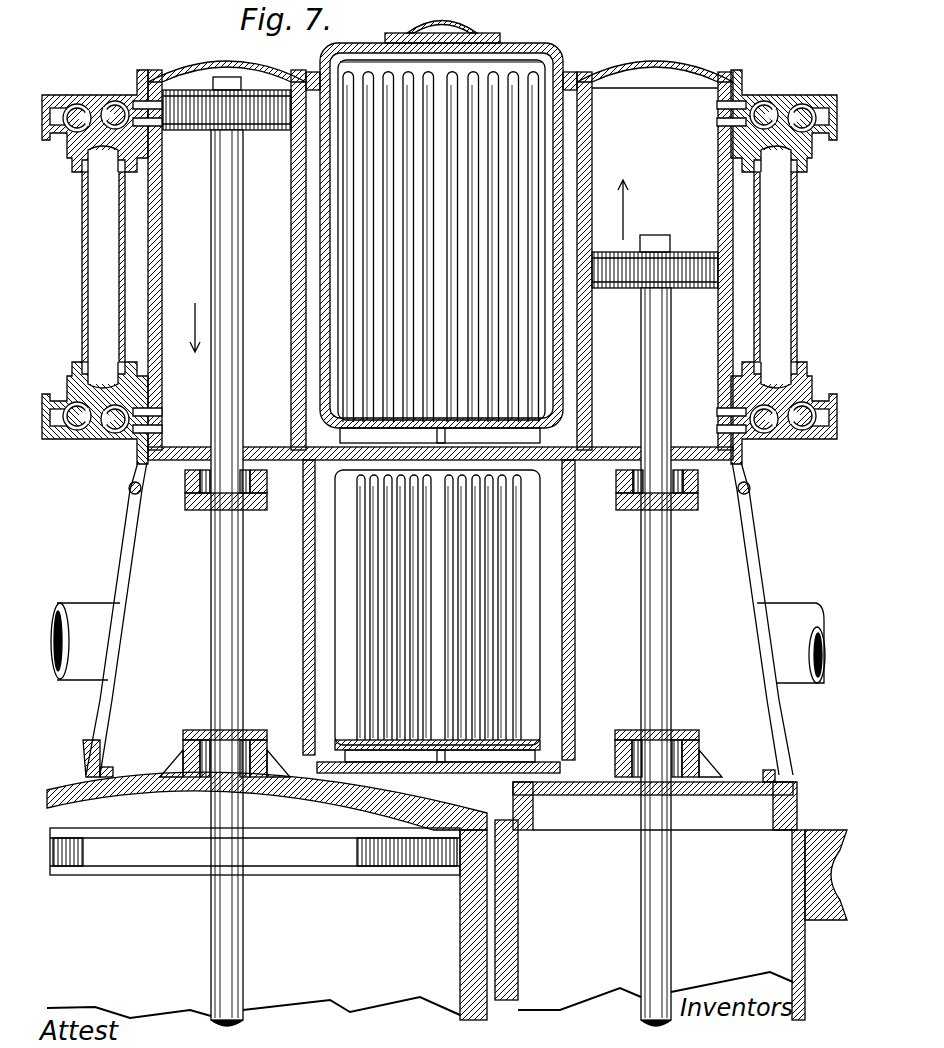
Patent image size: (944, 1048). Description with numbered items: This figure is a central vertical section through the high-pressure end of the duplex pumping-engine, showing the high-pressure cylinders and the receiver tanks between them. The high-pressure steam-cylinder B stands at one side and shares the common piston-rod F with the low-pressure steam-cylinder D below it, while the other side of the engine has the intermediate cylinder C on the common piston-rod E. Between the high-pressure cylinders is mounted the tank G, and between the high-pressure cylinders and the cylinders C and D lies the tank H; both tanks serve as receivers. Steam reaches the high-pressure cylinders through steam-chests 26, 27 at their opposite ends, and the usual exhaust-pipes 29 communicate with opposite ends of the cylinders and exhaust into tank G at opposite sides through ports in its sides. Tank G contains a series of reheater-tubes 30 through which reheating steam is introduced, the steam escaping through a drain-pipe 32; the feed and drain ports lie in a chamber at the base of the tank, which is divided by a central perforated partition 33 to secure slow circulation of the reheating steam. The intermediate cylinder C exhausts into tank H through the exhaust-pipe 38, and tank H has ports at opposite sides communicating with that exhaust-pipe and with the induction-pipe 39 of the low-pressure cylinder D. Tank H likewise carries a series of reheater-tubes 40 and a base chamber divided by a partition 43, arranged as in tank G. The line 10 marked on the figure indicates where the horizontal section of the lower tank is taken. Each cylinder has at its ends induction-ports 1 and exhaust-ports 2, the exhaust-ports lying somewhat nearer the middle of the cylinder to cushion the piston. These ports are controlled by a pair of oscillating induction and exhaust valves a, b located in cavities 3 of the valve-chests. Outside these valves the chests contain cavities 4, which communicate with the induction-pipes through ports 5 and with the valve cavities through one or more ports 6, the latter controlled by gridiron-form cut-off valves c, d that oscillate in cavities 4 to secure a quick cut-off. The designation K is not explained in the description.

The induction-ports 1 is at (157, 98).
The exhaust-ports 2 is at (162, 124).
The cavities 3 is at (110, 102).
The cavities 4 is at (72, 135).
The ports 5 is at (440, 269).
The ports 6 is at (112, 138).
The section line 10 is at (446, 643).
The steam-chest 26 is at (812, 142).
The steam-chest 27 is at (84, 100).
The exhaust-pipes 29 is at (82, 239).
The reheater-tubes 30 is at (343, 78).
The drain-pipe 32 is at (430, 262).
The central perforated partition 33 is at (446, 436).
The exhaust-pipe 38 is at (791, 643).
The induction-pipe 39 is at (85, 641).
The reheater-tubes 40 is at (358, 530).
The partition 43 is at (437, 766).
The induction valve a is at (117, 100).
The exhaust valve b is at (116, 430).
The cut-off valve c is at (70, 100).
The cut-off valve d is at (70, 434).
The high-pressure steam-cylinder B is at (234, 255).
The tank H is at (648, 255).
The tank G is at (525, 50).
The condenser K is at (575, 652).
The intermediate cylinder C is at (653, 901).
The low-pressure steam-cylinder D is at (267, 845).
The piston-rod E is at (671, 530).
The piston-rod F is at (211, 530).